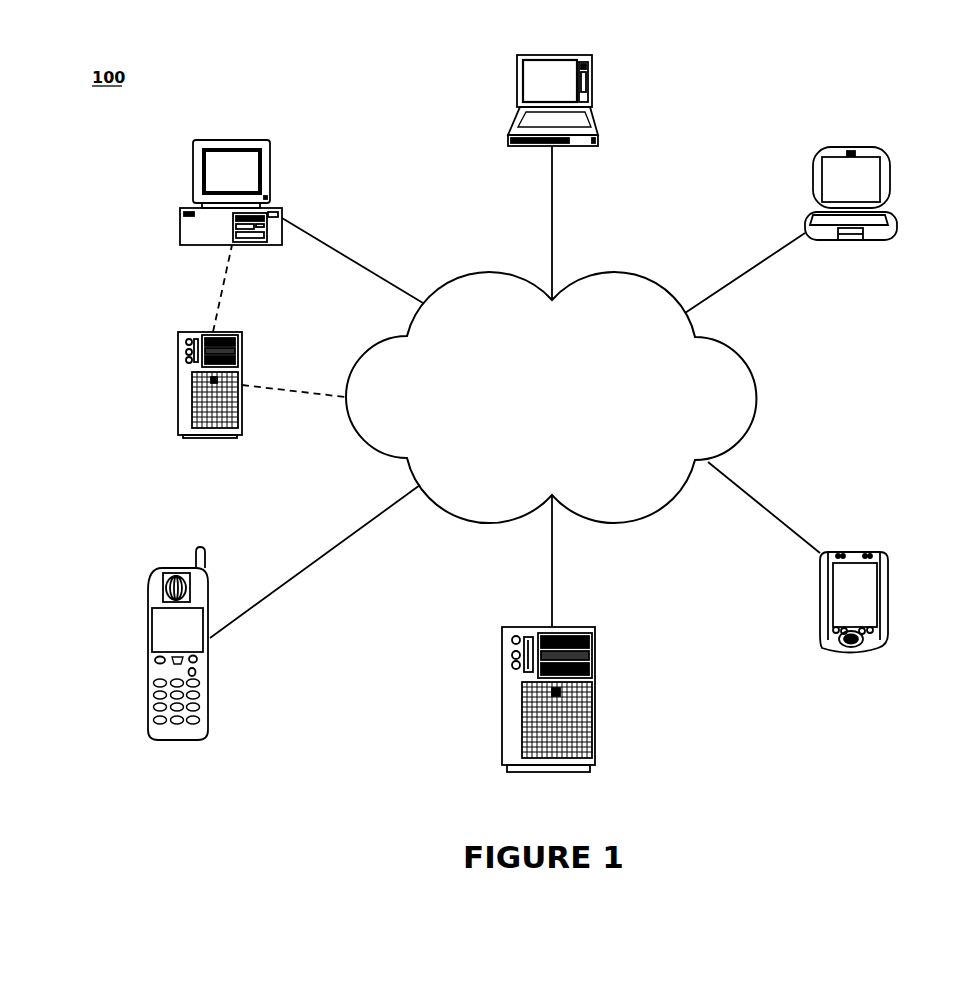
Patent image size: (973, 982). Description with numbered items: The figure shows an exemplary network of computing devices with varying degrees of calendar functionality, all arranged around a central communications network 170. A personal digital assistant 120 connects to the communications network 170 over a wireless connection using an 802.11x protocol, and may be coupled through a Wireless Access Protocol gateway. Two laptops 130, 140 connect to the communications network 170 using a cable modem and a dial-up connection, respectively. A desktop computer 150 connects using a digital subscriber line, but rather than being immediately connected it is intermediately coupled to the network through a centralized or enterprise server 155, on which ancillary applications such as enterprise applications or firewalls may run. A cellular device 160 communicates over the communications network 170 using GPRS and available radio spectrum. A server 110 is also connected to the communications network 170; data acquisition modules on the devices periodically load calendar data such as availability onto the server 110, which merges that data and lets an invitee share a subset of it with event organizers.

The server 110 is at (596, 700).
The personal digital assistant 120 is at (888, 600).
The laptop 130 is at (898, 226).
The laptop 140 is at (593, 100).
The desktop computer 150 is at (183, 217).
The enterprise server 155 is at (178, 385).
The cellular device 160 is at (148, 645).
The communications network 170 is at (551, 397).